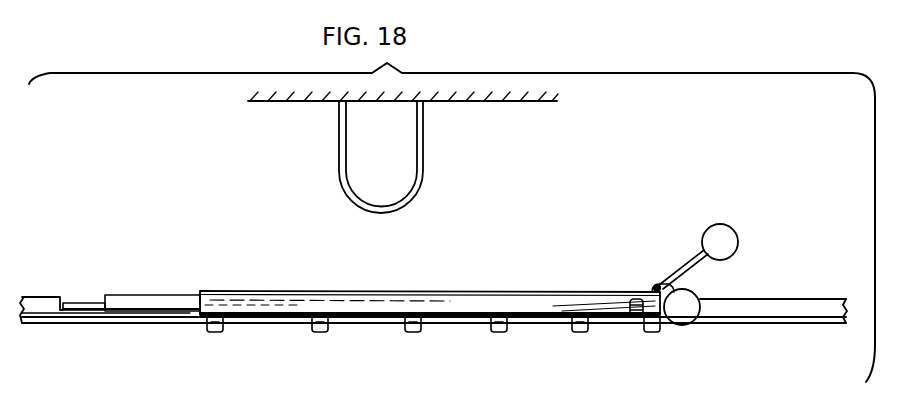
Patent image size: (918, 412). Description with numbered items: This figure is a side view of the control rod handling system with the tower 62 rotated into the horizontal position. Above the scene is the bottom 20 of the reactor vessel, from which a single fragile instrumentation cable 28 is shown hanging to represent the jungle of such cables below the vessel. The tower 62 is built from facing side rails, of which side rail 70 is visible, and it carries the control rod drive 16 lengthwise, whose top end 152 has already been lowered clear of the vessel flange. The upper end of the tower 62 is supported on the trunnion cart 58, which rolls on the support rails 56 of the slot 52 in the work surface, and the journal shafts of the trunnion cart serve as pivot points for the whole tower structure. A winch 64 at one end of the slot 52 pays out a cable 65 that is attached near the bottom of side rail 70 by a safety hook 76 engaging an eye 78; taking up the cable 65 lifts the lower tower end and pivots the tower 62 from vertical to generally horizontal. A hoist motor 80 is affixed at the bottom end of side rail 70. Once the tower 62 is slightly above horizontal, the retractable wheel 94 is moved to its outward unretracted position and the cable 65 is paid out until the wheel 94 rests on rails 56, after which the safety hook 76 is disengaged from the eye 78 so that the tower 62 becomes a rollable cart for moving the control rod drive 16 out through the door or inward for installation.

The control rod drive 16 is at (174, 295).
The bottom 20 is at (512, 101).
The instrumentation cable 28 is at (423, 170).
The slot 52 is at (44, 297).
The support rail 56 is at (50, 325).
The trunnion cart 58 is at (190, 323).
The tower 62 is at (545, 280).
The winch 64 is at (738, 238).
The cable 65 is at (683, 253).
The first side rail 70 is at (435, 292).
The safety hook 76 is at (654, 288).
The eye 78 is at (663, 283).
The hoist motor 80 is at (688, 326).
The retractable wheel 94 is at (617, 320).
The top end 152 is at (64, 303).